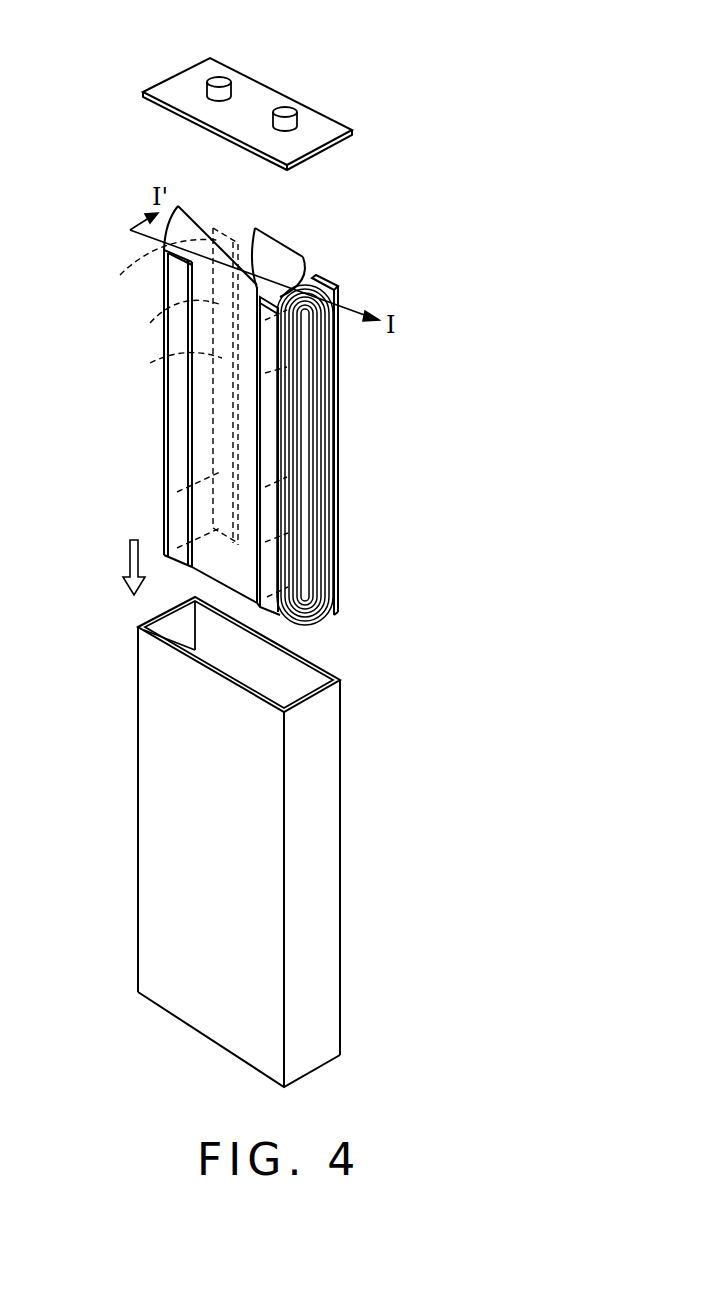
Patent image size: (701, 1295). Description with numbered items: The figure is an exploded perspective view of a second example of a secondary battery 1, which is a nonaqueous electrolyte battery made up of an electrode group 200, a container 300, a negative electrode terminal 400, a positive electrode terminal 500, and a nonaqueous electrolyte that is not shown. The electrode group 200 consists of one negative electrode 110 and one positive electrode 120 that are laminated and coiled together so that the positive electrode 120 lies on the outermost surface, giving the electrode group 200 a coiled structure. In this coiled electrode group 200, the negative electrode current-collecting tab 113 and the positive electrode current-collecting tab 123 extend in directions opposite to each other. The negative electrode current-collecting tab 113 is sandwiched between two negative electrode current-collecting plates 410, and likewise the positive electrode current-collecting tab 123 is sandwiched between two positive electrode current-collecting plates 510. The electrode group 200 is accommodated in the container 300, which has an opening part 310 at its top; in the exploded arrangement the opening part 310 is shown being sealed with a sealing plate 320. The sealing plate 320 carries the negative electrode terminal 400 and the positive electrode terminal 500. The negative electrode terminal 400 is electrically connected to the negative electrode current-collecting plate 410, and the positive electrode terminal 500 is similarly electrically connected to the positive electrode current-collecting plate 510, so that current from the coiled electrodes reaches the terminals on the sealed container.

The secondary battery 1 is at (91, 749).
The negative electrode 110 is at (279, 246).
The negative electrode current-collecting tab 113 is at (330, 407).
The positive electrode 120 is at (190, 222).
The positive electrode current-collecting tab 123 is at (187, 305).
The electrode group 200 is at (313, 172).
The container 300 is at (323, 823).
The opening part 310 is at (297, 682).
The sealing plate 320 is at (335, 118).
The negative electrode terminal 400 is at (286, 108).
The negative electrode current-collecting plates 410 is at (336, 292).
The positive electrode terminal 500 is at (220, 78).
The positive electrode current-collecting plates 510 is at (168, 250).